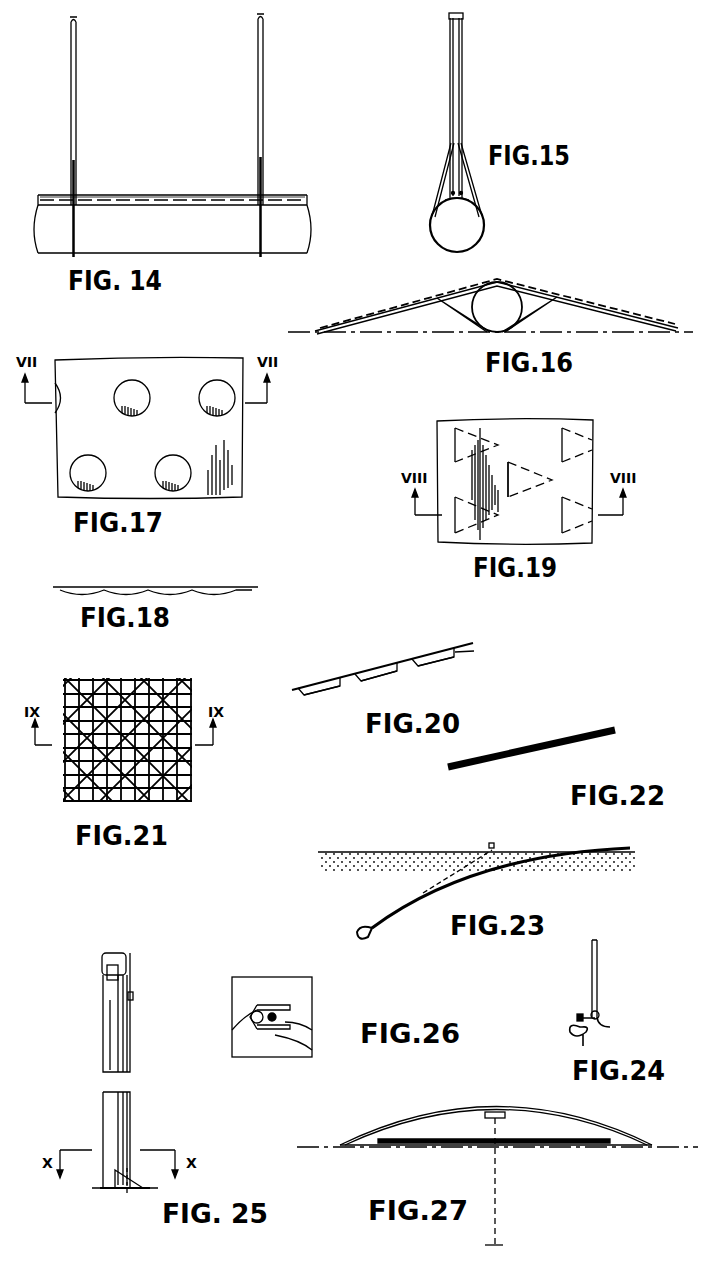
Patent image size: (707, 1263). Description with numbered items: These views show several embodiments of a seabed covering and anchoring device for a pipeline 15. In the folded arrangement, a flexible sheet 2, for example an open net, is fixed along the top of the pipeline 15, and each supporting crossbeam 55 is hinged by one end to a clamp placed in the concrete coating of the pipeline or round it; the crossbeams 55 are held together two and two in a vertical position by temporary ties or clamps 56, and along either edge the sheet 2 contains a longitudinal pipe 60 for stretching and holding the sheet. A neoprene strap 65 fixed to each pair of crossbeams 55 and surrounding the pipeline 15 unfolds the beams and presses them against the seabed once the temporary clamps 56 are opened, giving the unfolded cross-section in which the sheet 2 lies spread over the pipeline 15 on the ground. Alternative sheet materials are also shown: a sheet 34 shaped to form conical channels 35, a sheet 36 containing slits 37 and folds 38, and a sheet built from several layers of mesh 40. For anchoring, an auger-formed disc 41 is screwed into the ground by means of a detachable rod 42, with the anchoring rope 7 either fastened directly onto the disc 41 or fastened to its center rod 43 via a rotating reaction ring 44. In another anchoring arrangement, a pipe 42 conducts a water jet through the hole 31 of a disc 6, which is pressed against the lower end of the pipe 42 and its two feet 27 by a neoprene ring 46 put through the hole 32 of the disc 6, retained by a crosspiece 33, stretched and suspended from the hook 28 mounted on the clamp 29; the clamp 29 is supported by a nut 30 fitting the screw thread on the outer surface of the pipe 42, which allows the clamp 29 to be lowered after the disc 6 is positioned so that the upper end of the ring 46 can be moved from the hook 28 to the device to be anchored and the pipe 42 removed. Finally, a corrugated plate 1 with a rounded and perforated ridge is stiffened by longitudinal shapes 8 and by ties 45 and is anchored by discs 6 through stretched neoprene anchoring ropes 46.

In FIG. 27, the corrugated plate 1 is at (592, 1125).
In FIG. 14, the flexible sheet 2 is at (140, 195).
In FIG. 15, the flexible sheet 2 is at (446, 202).
In FIG. 16, the flexible sheet 2 is at (428, 298).
In FIG. 25, the disc 6 is at (147, 1191).
In FIG. 26, the disc 6 is at (278, 1047).
In FIG. 27, the disc 6 is at (496, 1240).
In FIG. 23, the anchoring rope 7 is at (503, 864).
In FIG. 24, the anchoring rope 7 is at (598, 961).
In FIG. 27, the longitudinal shapes 8 is at (628, 1138).
In FIG. 14, the roller tube 15 is at (307, 225).
In FIG. 15, the roller tube 15 is at (441, 227).
In FIG. 16, the roller tube 15 is at (498, 290).
In FIG. 25, the feet 27 is at (131, 1184).
In FIG. 26, the feet 27 is at (288, 1005).
In FIG. 25, the hook 28 is at (133, 995).
In FIG. 25, the clamp 29 is at (105, 1000).
In FIG. 25, the nut 30 is at (102, 972).
In FIG. 26, the hole 31 is at (250, 1015).
In FIG. 26, the hole 32 is at (312, 1029).
In FIG. 25, the crosspiece 33 is at (117, 1193).
In FIG. 26, the crosspiece 33 is at (312, 1049).
In FIG. 17, the sheet 34 is at (62, 438).
In FIG. 18, the sheet 34 is at (231, 590).
In FIG. 17, the conical channels 35 is at (132, 417).
In FIG. 18, the conical channels 35 is at (224, 587).
In FIG. 19, the sheet 36 is at (593, 452).
In FIG. 20, the sheet 36 is at (453, 649).
In FIG. 19, the slits 37 is at (560, 456).
In FIG. 20, the slits 37 is at (405, 667).
In FIG. 19, the folds 38 is at (517, 493).
In FIG. 20, the folds 38 is at (322, 694).
In FIG. 22, the mesh 40 is at (497, 767).
In FIG. 21, the mesh 40 is at (192, 678).
In FIG. 23, the auger-formed disc 41 is at (370, 921).
In FIG. 24, the auger-formed disc 41 is at (573, 1037).
In FIG. 23, the detachable rod 42 is at (425, 890).
In FIG. 25, the detachable rod 42 is at (110, 1037).
In FIG. 26, the detachable rod 42 is at (232, 1040).
In FIG. 24, the center rod 43 is at (608, 1027).
In FIG. 24, the rotating reaction ring 44 is at (600, 1010).
In FIG. 27, the ties 45 is at (577, 1143).
In FIG. 25, the neoprene ring 46 is at (131, 1050).
In FIG. 27, the neoprene ring 46 is at (496, 1187).
In FIG. 14, the supporting crossbeam 55 is at (76, 87).
In FIG. 15, the supporting crossbeam 55 is at (452, 85).
In FIG. 16, the supporting crossbeam 55 is at (418, 310).
In FIG. 14, the ties or clamps 56 is at (263, 20).
In FIG. 15, the ties or clamps 56 is at (450, 18).
In FIG. 14, the longitudinal pipe 60 is at (178, 195).
In FIG. 15, the longitudinal pipe 60 is at (450, 192).
In FIG. 14, the neoprene strap 65 is at (262, 238).
In FIG. 15, the neoprene strap 65 is at (448, 162).
In FIG. 16, the neoprene strap 65 is at (462, 315).